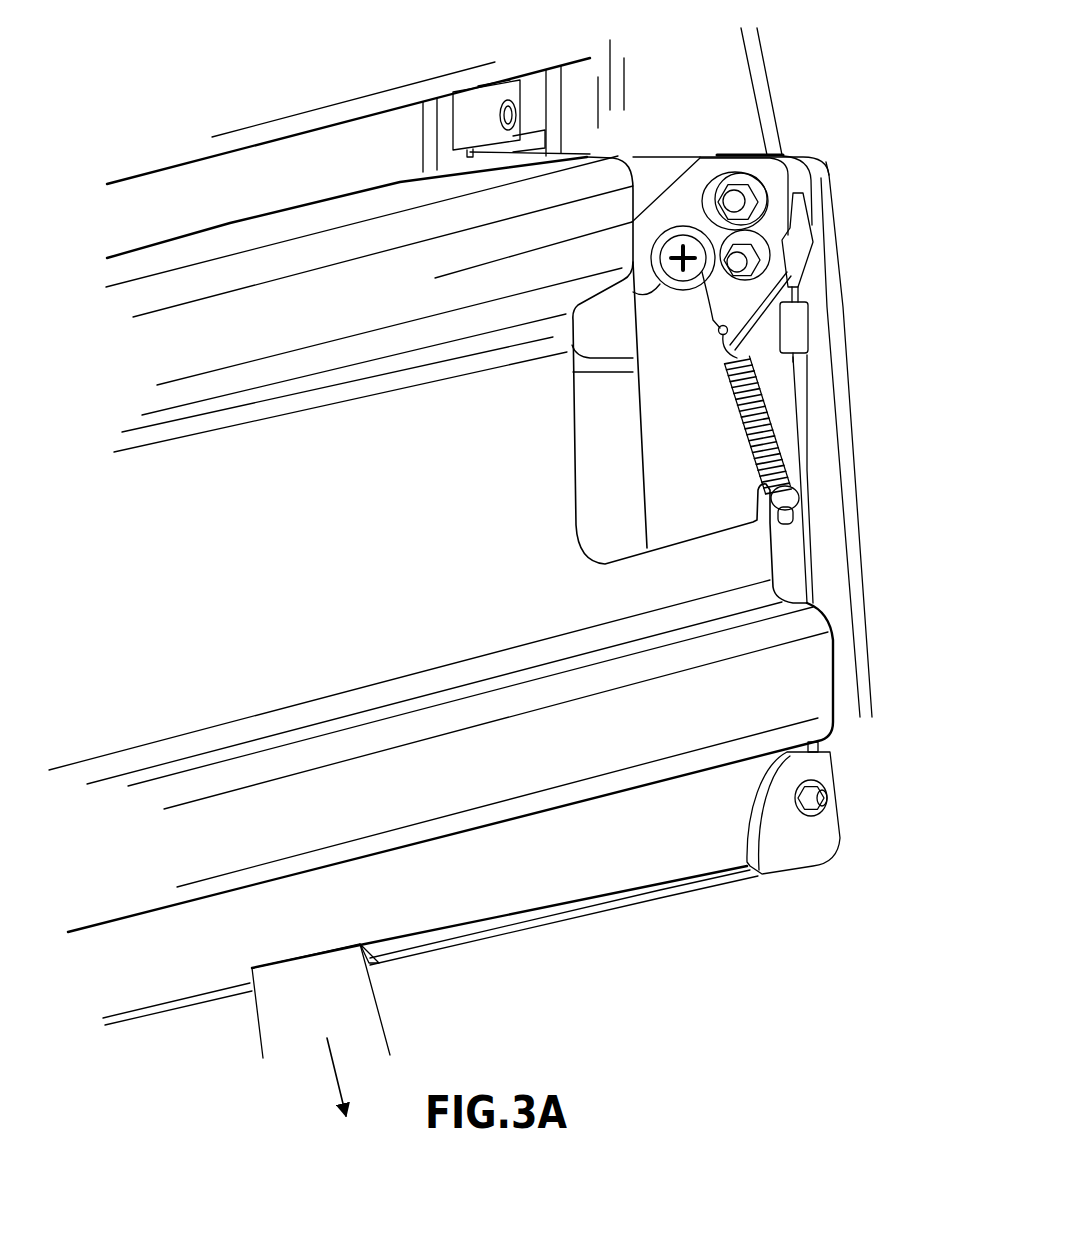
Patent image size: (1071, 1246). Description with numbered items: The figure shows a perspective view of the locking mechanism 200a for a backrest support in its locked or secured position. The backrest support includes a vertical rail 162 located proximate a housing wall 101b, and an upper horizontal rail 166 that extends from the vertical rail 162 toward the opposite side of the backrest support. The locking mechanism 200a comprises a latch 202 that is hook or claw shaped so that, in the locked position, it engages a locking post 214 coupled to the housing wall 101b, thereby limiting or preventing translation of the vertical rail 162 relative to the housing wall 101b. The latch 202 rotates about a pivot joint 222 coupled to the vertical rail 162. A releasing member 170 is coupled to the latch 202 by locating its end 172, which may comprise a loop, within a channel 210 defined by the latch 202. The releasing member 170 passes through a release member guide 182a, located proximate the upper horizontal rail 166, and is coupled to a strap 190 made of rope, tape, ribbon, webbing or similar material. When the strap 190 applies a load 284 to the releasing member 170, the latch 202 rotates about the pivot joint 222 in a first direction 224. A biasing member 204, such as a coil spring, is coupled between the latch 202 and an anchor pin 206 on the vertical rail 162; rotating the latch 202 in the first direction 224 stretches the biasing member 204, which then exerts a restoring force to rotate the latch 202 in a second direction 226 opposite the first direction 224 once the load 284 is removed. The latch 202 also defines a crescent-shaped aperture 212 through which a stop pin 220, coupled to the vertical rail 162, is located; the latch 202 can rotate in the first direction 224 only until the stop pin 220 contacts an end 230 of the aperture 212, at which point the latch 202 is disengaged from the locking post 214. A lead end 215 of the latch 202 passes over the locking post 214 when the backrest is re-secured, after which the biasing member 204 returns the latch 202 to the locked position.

The housing wall 101b is at (677, 79).
The locking mechanism 200a is at (776, 120).
The channel 210 is at (803, 178).
The pivot joint 222 is at (798, 180).
The vertical rail 162 is at (710, 440).
The upper horizontal rail 166 is at (404, 449).
The latch 202 is at (667, 190).
The lead end 215 is at (647, 228).
The aperture 212 is at (712, 182).
The end of aperture 230 is at (707, 182).
The locking post 214 is at (660, 268).
The stop pin 220 is at (758, 259).
The first direction 224 is at (772, 247).
The end of releasing member 172 is at (798, 287).
The second direction 226 is at (766, 279).
The biasing member 204 is at (774, 418).
The anchor pin 206 is at (794, 507).
The releasing member 170 is at (808, 561).
The release member guide 182a is at (827, 822).
The strap 190 is at (352, 1018).
The load 284 is at (333, 1077).